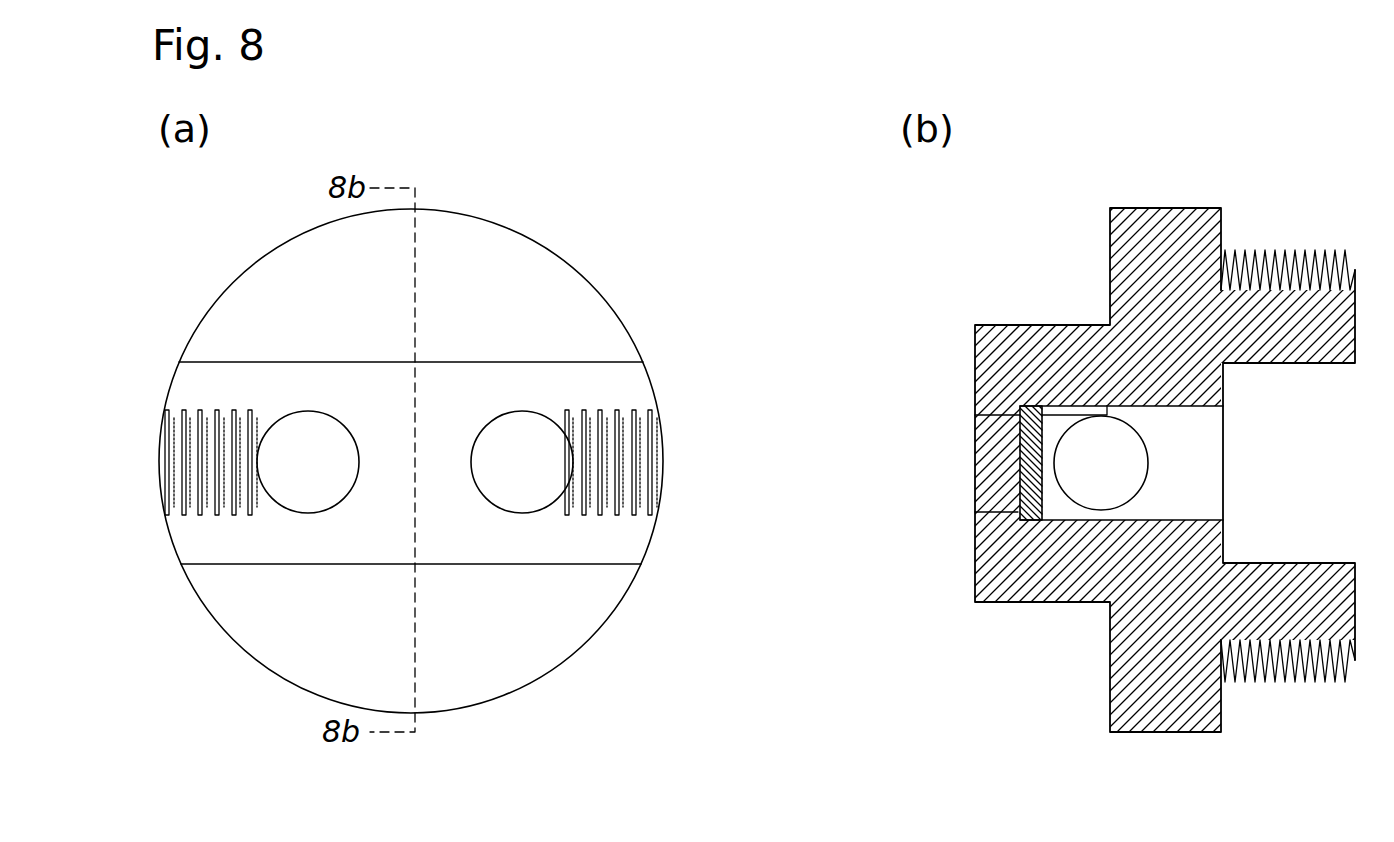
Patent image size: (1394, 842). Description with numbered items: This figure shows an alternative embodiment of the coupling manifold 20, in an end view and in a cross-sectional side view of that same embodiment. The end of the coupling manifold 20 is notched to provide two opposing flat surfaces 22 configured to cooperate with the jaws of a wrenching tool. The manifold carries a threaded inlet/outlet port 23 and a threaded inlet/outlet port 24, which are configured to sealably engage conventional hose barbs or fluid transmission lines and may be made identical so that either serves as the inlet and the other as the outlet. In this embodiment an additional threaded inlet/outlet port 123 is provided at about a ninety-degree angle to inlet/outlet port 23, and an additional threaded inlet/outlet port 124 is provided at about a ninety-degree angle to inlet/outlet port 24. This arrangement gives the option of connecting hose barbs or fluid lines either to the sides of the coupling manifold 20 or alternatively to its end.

The coupling manifold 20 is at (478, 212).
The flat surfaces 22 is at (583, 362).
The threaded inlet/outlet port 23 is at (262, 410).
The threaded inlet/outlet port 24 is at (635, 410).
The additional threaded inlet/outlet port 123 is at (308, 513).
The additional threaded inlet/outlet port 124 is at (522, 513).